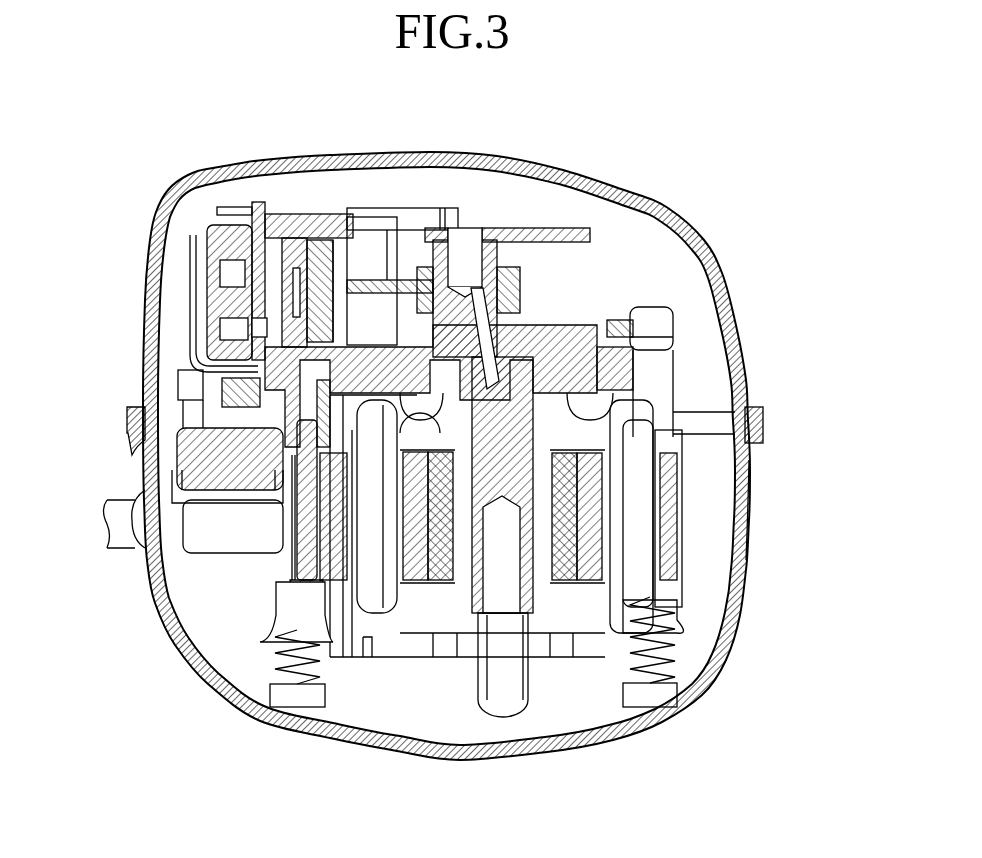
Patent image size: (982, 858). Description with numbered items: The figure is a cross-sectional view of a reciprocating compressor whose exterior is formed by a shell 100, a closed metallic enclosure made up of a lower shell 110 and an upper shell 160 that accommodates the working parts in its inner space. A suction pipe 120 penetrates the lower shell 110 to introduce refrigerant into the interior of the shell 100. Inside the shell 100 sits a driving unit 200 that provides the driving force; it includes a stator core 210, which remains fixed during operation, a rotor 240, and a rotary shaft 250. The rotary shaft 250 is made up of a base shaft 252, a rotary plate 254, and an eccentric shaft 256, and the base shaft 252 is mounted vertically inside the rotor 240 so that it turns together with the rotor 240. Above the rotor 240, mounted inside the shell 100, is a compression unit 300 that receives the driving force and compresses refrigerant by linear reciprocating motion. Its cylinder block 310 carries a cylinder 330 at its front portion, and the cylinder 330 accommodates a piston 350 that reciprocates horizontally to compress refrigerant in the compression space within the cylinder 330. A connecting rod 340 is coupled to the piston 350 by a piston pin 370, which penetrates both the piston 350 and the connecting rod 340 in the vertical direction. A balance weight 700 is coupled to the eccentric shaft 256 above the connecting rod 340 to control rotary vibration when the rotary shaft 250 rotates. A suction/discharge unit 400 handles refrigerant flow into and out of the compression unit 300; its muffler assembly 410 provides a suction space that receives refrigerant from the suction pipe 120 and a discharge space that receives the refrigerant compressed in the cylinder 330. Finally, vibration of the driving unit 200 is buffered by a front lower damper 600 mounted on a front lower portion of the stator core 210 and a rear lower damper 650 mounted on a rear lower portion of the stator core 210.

The shell 100 is at (510, 456).
The lower shell 110 is at (755, 452).
The suction pipe 120 is at (103, 524).
The upper shell 160 is at (765, 412).
The driving unit 200 is at (580, 604).
The stator core 210 is at (680, 535).
The rotor 240 is at (600, 493).
The rotary shaft 250 is at (683, 349).
The base shaft 252 is at (582, 340).
The rotary plate 254 is at (627, 333).
The eccentric shaft 256 is at (490, 296).
The compression unit 300 is at (413, 222).
The cylinder block 310 is at (452, 248).
The cylinder 330 is at (335, 237).
The connecting rod 340 is at (380, 270).
The piston 350 is at (292, 240).
The piston pin 370 is at (320, 248).
The suction/discharge unit 400 is at (168, 350).
The muffler assembly 410 is at (183, 387).
The front lower damper 600 is at (295, 697).
The rear lower damper 650 is at (648, 700).
The balance weight 700 is at (540, 237).